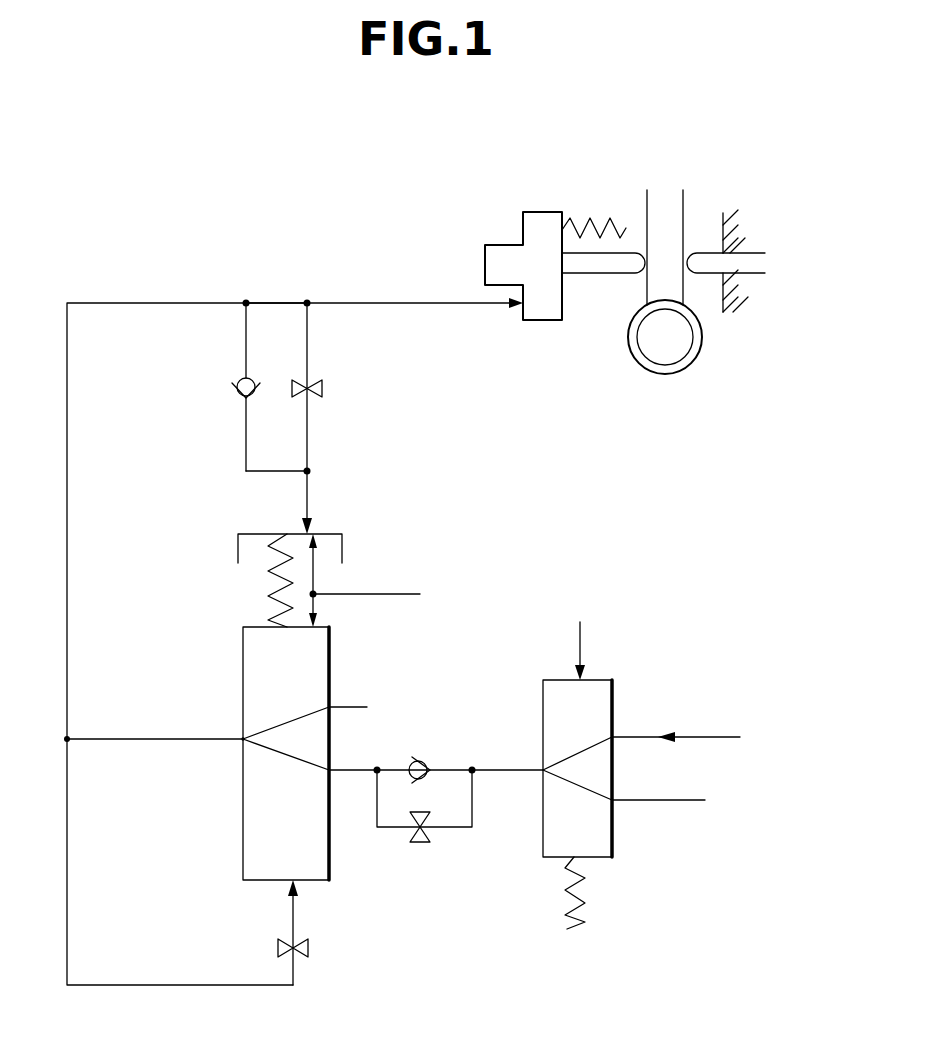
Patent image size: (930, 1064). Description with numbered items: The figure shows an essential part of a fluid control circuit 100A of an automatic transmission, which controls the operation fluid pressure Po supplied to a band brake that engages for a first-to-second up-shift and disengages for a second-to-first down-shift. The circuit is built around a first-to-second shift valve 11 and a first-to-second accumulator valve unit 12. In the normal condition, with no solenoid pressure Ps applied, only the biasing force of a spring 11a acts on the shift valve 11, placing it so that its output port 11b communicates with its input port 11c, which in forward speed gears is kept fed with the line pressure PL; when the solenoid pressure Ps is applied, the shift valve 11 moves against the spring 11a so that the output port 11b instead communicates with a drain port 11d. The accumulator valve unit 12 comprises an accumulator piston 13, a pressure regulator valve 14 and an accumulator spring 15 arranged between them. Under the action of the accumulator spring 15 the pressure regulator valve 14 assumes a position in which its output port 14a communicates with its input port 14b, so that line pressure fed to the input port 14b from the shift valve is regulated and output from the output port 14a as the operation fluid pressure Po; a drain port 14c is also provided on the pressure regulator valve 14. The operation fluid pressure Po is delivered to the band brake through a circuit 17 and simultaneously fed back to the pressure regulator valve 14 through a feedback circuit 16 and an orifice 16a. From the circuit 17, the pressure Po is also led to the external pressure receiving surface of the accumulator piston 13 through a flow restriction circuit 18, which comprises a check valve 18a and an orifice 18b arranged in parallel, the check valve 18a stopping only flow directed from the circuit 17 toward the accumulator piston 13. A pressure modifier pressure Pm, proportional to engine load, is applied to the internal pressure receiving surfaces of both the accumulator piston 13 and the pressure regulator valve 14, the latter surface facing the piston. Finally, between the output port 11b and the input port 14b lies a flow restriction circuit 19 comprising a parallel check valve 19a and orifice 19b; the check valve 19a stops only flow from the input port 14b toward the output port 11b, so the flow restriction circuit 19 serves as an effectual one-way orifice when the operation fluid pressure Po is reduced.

The fluid control circuit 100A is at (548, 120).
The 1–2 shift valve 11 is at (604, 776).
The spring 11a is at (583, 905).
The output port 11b is at (543, 770).
The input port 11c is at (612, 737).
The drain port 11d is at (612, 800).
The 1–2 accumulator valve unit 12 is at (207, 892).
The accumulator piston 13 is at (248, 530).
The pressure regulator valve 14 is at (350, 753).
The output port 14a is at (243, 742).
The input port 14b is at (329, 770).
The drain port 14c is at (329, 707).
The accumulator spring 15 is at (273, 568).
The feedback circuit 16 is at (336, 942).
The orifice 16a is at (310, 948).
The circuit 17 is at (67, 455).
The flow restriction circuit 18 is at (350, 389).
The check valve 18a is at (252, 378).
The orifice 18b is at (324, 388).
The flow restriction circuit 19 is at (459, 849).
The check valve 19a is at (425, 778).
The orifice 19b is at (420, 845).